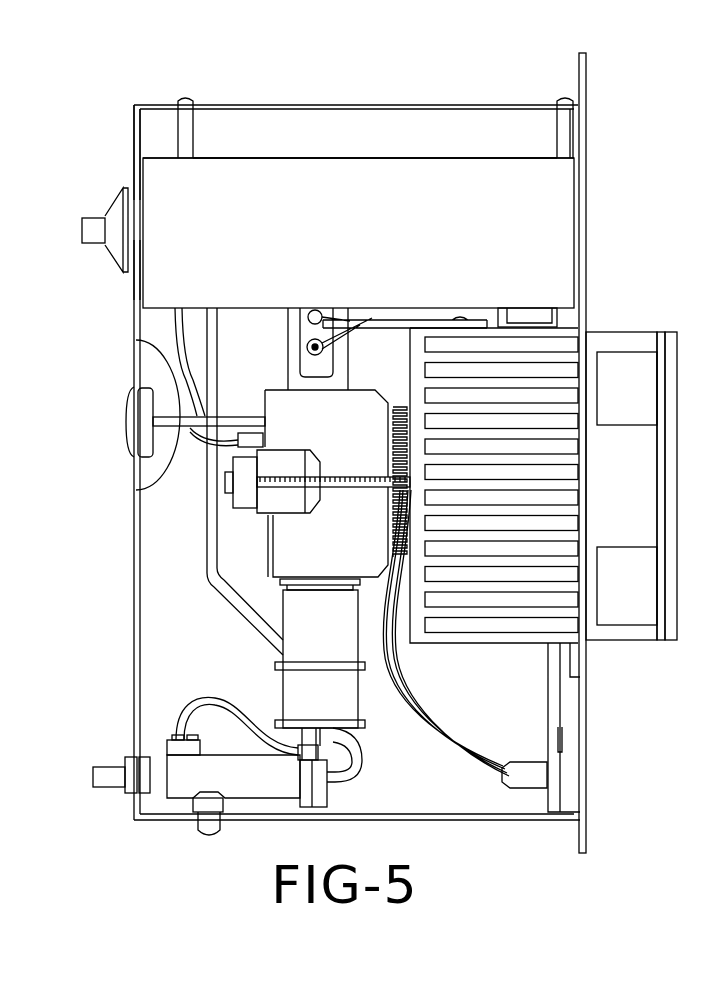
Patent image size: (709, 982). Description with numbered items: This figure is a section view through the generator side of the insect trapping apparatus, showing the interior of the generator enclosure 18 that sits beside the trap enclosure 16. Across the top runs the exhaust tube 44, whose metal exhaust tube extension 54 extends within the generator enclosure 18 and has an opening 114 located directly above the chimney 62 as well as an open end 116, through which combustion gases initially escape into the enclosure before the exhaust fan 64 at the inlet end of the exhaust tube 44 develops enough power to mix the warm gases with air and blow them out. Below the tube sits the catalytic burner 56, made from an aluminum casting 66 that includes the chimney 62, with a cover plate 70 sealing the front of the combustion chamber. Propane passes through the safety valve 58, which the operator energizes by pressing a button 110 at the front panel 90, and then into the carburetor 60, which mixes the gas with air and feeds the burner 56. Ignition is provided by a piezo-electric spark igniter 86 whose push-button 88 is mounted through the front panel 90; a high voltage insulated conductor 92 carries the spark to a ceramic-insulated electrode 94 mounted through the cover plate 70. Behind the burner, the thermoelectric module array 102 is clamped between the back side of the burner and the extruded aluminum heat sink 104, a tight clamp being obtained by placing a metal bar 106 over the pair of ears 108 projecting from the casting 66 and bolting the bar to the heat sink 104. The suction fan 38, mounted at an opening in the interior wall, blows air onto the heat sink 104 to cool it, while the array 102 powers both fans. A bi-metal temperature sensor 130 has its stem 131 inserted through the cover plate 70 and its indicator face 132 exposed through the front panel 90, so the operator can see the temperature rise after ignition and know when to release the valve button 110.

The trap enclosure 16 is at (578, 80).
The generator enclosure 18 is at (237, 103).
The suction fan 38 is at (613, 333).
The exhaust tube 44 is at (366, 146).
The exhaust tube extension 54 is at (505, 148).
The catalytic burner 56 is at (309, 453).
The propane safety valve 58 is at (167, 760).
The carburetor 60 is at (282, 697).
The chimney 62 is at (283, 332).
The exhaust fan 64 is at (137, 272).
The aluminum casting 66 is at (376, 397).
The cover plate 70 is at (268, 572).
The piezo-electric spark igniter 86 is at (118, 195).
The push-button 88 is at (90, 215).
The front panel 90 is at (135, 640).
The high voltage insulated conductor 92 is at (178, 360).
The ceramic-insulated electrode 94 is at (252, 440).
The thermoelectric module array 102 is at (393, 528).
The heat sink 104 is at (440, 650).
The metal bar 106 is at (242, 492).
The ears 108 is at (272, 466).
The button 110 is at (103, 770).
The opening 114 is at (213, 160).
The open end 116 is at (135, 165).
The bi-metal temperature sensor 130 is at (125, 394).
The stem 131 is at (176, 460).
The indicator face 132 is at (127, 435).